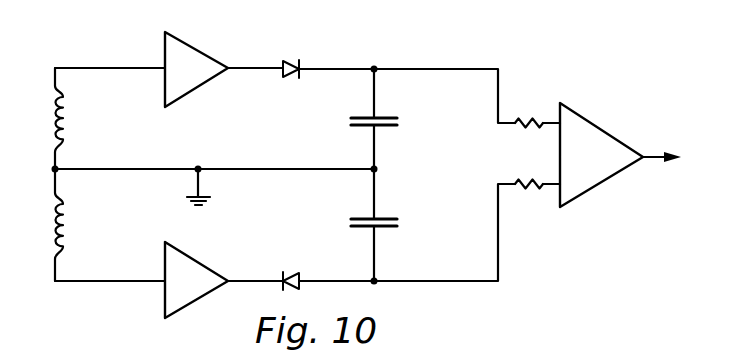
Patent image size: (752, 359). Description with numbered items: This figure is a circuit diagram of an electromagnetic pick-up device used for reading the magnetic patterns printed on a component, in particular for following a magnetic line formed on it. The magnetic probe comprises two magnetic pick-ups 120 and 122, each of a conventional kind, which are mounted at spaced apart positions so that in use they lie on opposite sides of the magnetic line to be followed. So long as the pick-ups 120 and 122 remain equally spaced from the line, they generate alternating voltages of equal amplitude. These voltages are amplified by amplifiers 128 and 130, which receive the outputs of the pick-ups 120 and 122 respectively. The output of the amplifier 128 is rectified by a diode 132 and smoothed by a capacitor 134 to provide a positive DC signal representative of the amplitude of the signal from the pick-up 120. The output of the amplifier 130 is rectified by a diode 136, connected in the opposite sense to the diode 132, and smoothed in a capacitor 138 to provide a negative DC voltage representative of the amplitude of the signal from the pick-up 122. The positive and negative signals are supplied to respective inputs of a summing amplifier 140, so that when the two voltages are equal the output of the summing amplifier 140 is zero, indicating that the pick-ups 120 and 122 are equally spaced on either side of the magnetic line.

The magnetic pick-up 120 is at (66, 112).
The magnetic pick-up 122 is at (66, 222).
The amplifier 128 is at (186, 56).
The amplifier 130 is at (190, 270).
The diode 132 is at (299, 66).
The capacitor 134 is at (383, 117).
The diode 136 is at (289, 273).
The capacitor 138 is at (386, 228).
The summing amplifier 140 is at (598, 133).